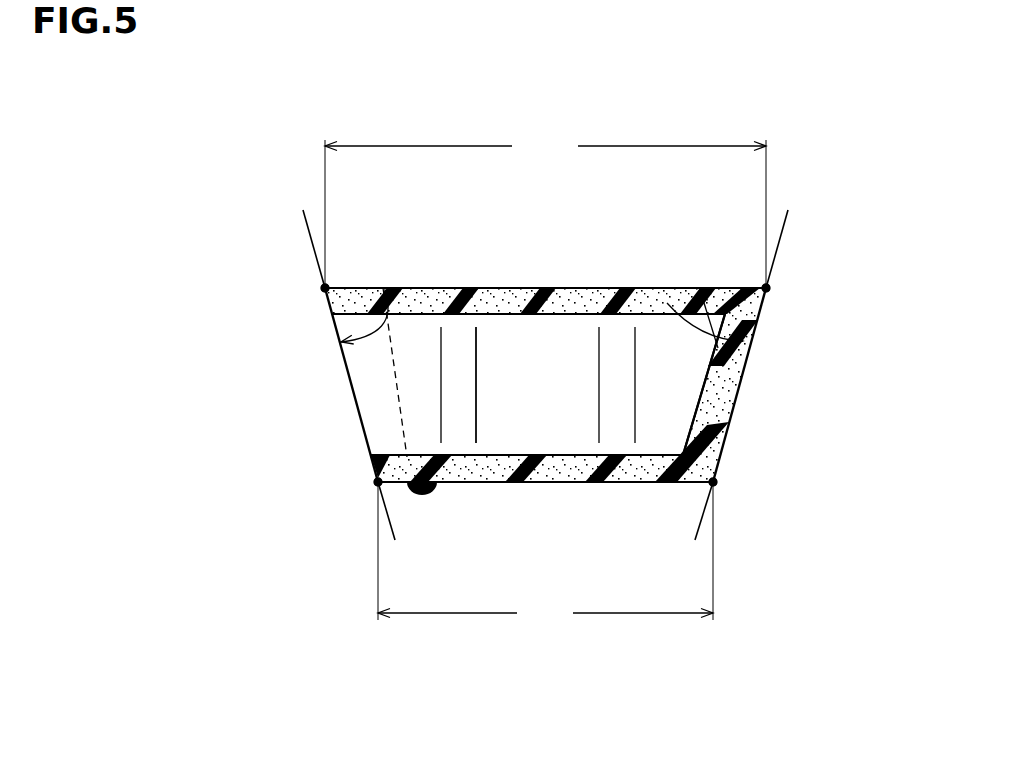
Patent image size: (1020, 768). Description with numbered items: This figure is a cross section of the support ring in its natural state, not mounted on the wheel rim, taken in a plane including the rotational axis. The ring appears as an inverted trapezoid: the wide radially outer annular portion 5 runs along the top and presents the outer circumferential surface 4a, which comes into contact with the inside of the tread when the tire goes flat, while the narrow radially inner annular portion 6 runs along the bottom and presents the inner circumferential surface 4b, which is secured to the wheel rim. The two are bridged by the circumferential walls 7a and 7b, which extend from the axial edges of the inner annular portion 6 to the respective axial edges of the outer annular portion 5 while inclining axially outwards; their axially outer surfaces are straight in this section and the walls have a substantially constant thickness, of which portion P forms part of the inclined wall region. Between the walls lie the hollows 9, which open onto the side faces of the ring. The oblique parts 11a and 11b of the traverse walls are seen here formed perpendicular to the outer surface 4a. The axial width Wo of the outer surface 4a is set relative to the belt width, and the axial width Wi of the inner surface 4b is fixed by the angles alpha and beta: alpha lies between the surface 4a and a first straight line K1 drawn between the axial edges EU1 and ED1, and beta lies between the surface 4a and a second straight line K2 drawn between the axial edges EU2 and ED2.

The outer circumferential surface 4a is at (613, 287).
The inner circumferential surface 4b is at (601, 485).
The radially outer annular portion 5 is at (463, 288).
The radially inner annular portion 6 is at (505, 483).
The circumferential wall 7a is at (390, 393).
The circumferential wall 7b is at (720, 410).
The hollow 9 is at (442, 403).
The oblique part 11a is at (462, 373).
The oblique part 11b is at (613, 372).
The conductive paste portion P is at (730, 425).
The first straight line K1 is at (310, 235).
The second straight line K2 is at (785, 230).
The axial edge of outer circumferential surface EU1 is at (325, 288).
The axial edge of outer circumferential surface EU2 is at (766, 288).
The axial edge of inner circumferential surface ED1 is at (378, 482).
The axial edge of inner circumferential surface ED2 is at (713, 482).
The axial width of outer circumferential surface Wo is at (545, 210).
The axial width of inner circumferential surface Wi is at (545, 555).